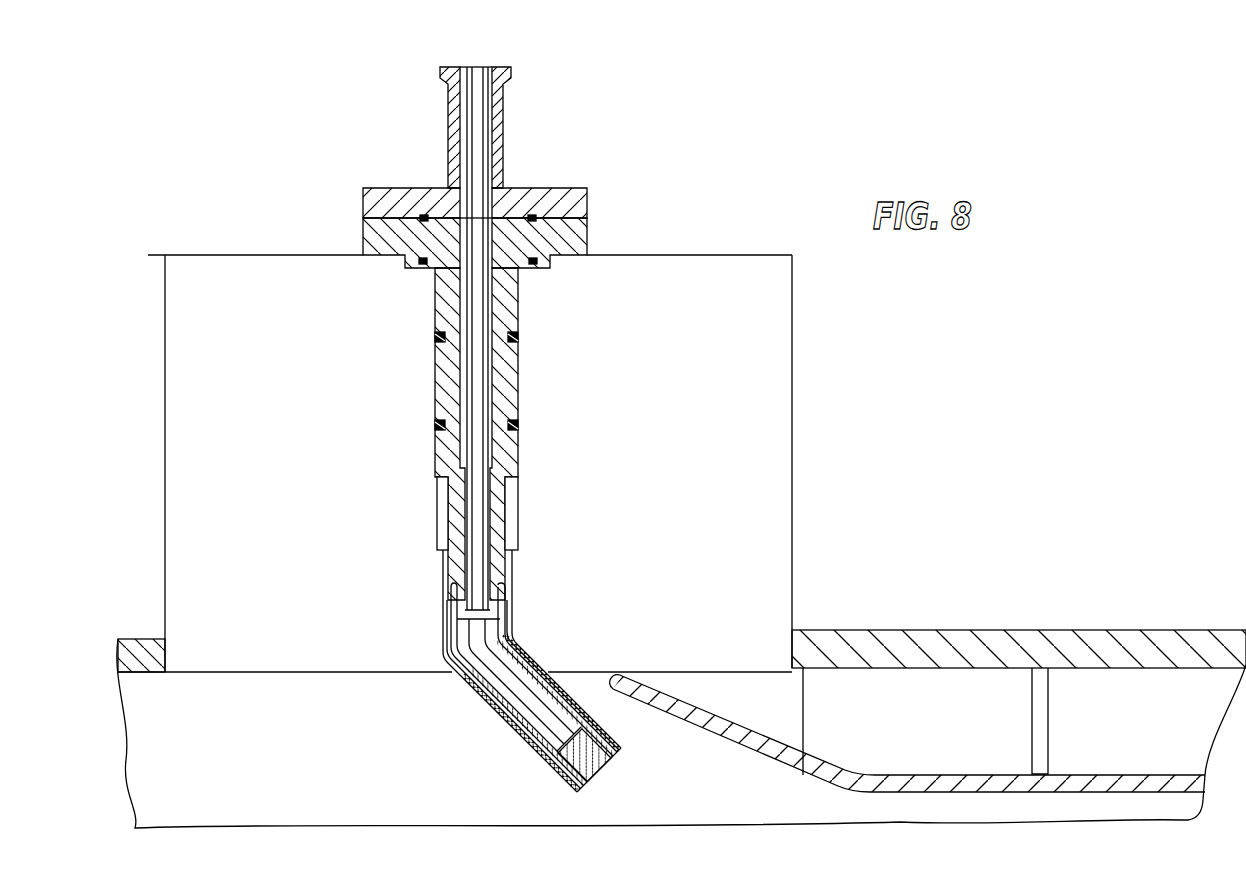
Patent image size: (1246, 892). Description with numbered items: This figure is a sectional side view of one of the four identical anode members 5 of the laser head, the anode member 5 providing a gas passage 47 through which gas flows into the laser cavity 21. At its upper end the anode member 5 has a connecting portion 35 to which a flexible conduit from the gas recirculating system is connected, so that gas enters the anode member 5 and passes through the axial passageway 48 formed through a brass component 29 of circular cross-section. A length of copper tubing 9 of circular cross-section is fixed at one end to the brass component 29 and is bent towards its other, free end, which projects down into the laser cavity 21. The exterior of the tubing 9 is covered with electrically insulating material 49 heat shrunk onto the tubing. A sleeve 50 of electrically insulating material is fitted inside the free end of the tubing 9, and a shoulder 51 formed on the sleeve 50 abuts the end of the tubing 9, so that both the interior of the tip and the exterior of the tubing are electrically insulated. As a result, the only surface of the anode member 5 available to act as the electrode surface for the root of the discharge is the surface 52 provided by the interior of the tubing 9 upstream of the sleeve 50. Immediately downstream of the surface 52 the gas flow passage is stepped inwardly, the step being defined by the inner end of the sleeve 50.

The connecting portion 35 is at (503, 140).
The anode member 5 is at (588, 232).
The brass component 29 is at (515, 384).
The axial passageway 48 is at (472, 380).
The gas passage 47 is at (460, 630).
The copper tubing 9 is at (508, 640).
The electrode surface 52 is at (561, 716).
The electrically insulating material 49 is at (531, 736).
The sleeve 50 is at (592, 766).
The shoulder 51 is at (586, 786).
The laser cavity 21 is at (822, 818).